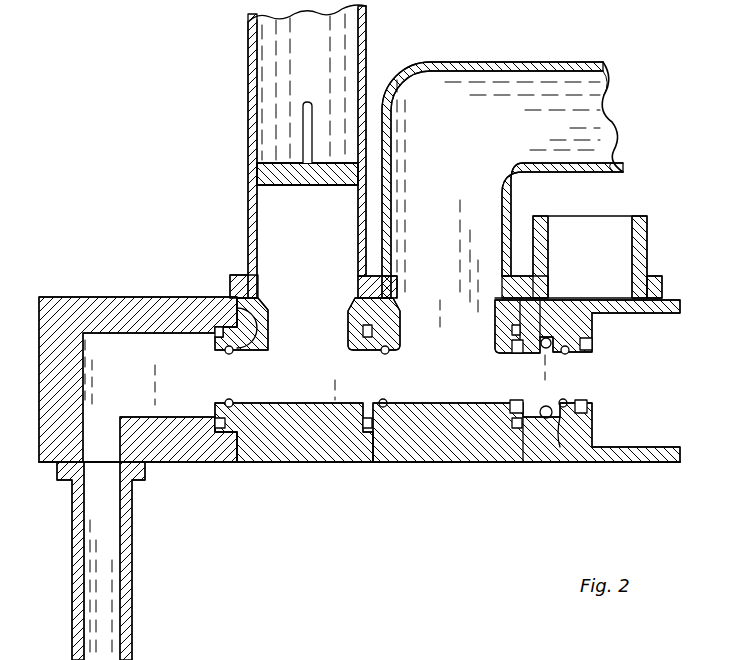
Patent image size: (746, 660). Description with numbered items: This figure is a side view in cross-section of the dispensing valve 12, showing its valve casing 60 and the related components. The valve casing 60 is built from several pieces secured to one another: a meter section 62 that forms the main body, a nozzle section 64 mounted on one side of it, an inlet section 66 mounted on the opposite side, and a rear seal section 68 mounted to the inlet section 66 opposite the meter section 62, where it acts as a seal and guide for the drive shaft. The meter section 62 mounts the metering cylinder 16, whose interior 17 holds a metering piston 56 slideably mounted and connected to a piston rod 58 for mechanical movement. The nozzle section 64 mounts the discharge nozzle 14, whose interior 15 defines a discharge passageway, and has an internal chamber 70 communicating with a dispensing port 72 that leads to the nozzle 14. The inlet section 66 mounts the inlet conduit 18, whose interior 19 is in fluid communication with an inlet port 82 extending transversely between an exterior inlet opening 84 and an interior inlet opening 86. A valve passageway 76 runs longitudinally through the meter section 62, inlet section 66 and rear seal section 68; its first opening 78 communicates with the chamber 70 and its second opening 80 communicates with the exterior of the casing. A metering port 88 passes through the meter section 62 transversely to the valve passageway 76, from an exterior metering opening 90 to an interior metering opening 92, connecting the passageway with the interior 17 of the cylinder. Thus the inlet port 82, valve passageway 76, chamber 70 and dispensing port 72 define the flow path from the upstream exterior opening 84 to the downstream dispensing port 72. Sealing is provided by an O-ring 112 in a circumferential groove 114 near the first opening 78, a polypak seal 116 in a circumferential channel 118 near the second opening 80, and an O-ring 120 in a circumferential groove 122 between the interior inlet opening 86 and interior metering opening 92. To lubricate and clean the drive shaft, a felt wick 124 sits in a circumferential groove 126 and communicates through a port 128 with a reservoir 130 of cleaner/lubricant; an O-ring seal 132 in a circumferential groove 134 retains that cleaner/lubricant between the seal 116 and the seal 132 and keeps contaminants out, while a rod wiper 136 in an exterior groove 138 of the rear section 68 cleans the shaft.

The dispensing valve 12 is at (120, 212).
The discharge nozzle 14 is at (72, 560).
The nozzle interior 15 is at (88, 510).
The metering cylinder 16 is at (248, 46).
The metering cylinder interior 17 is at (261, 220).
The inlet conduit 18 is at (480, 68).
The inlet conduit interior 19 is at (481, 137).
The metering piston 56 is at (257, 172).
The piston rod 58 is at (305, 143).
The valve casing 60 is at (125, 297).
The meter section 62 is at (283, 462).
The nozzle section 64 is at (166, 453).
The inlet section 66 is at (492, 460).
The rear seal section 68 is at (594, 440).
The internal chamber 70 is at (113, 360).
The dispensing port 72 is at (118, 461).
The valve passageway 76 is at (375, 390).
The first opening 78 is at (200, 370).
The second opening 80 is at (610, 379).
The inlet port 82 is at (433, 345).
The exterior inlet opening 84 is at (429, 290).
The interior inlet opening 86 is at (427, 357).
The metering port 88 is at (293, 340).
The exterior metering opening 90 is at (290, 289).
The interior metering opening 92 is at (298, 360).
The O-ring 112 is at (232, 403).
The circumferential groove 114 is at (235, 288).
The polypak seal 116 is at (532, 414).
The circumferential channel 118 is at (498, 342).
The O-ring 120 is at (413, 448).
The circumferential groove 122 is at (387, 400).
The wick 124 is at (557, 335).
The circumferential groove 126 is at (573, 463).
The port 128 is at (558, 298).
The reservoir 130 is at (585, 262).
The O-ring seal 132 is at (566, 356).
The circumferential groove 134 is at (562, 400).
The rod wiper 136 is at (590, 345).
The exterior groove 138 is at (588, 406).